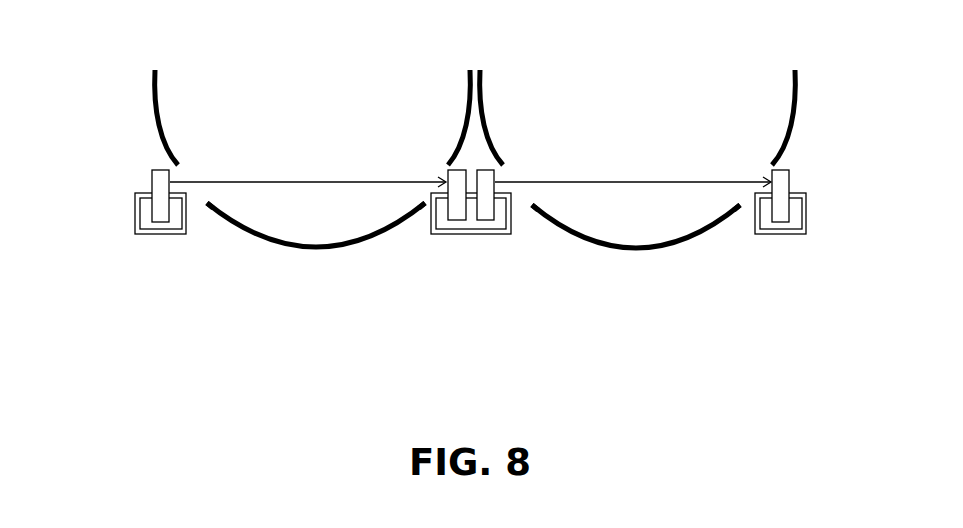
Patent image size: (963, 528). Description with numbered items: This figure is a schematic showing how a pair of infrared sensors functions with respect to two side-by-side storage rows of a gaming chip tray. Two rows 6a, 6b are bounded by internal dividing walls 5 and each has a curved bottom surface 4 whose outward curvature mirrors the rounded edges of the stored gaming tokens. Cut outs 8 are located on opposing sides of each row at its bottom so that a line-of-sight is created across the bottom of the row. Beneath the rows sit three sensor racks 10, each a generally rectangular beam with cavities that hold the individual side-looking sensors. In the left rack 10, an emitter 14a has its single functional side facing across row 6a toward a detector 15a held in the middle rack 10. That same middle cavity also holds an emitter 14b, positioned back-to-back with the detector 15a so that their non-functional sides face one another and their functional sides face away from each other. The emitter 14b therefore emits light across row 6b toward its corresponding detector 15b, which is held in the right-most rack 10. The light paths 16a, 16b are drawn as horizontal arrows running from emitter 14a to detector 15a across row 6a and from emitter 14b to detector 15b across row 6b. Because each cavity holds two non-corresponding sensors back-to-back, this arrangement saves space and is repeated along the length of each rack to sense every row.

The bottom surface 4 is at (292, 248).
The internal dividing wall 5 is at (152, 92).
The row 6a is at (276, 82).
The row 6b is at (637, 90).
The cut out 8 is at (200, 206).
The sensor rack 10 is at (135, 218).
The emitter 14a is at (150, 177).
The emitter 14b is at (487, 217).
The detector 15a is at (457, 208).
The detector 15b is at (792, 182).
The first flow direction 16a is at (370, 182).
The second flow direction 16b is at (683, 182).